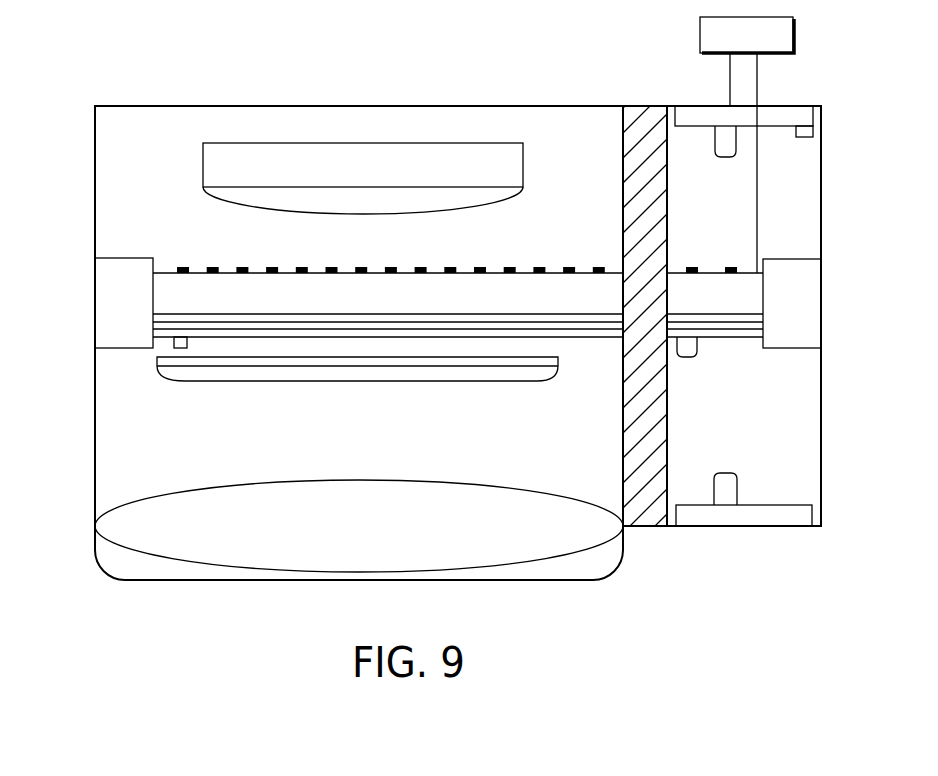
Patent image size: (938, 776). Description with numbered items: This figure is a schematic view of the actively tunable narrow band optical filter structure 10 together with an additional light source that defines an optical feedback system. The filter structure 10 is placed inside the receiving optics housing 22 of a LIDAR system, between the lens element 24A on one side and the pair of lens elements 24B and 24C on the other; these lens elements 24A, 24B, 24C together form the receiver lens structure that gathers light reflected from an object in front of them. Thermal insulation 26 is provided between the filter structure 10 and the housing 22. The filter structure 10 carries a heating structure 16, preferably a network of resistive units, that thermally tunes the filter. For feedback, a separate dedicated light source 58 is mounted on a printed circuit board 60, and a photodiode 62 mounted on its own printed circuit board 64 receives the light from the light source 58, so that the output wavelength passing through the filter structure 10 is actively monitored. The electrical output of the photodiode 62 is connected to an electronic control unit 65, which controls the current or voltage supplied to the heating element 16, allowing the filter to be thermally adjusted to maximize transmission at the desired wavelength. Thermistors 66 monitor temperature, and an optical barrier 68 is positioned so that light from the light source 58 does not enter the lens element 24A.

The receiving optics housing 22 is at (362, 116).
The lens element 24A is at (212, 167).
The lens element 24B is at (160, 358).
The lens element 24C is at (178, 500).
The filter structure 10 is at (405, 288).
The heating structure 16 is at (563, 270).
The thermal insulation 26 is at (792, 349).
The light source 58 is at (725, 474).
The printed circuit board 60 is at (743, 527).
The photodiode 62 is at (723, 158).
The printed circuit board 64 is at (770, 128).
The electronic control unit 65 is at (700, 35).
The thermistors 66 is at (813, 129).
The optical barrier 68 is at (643, 527).